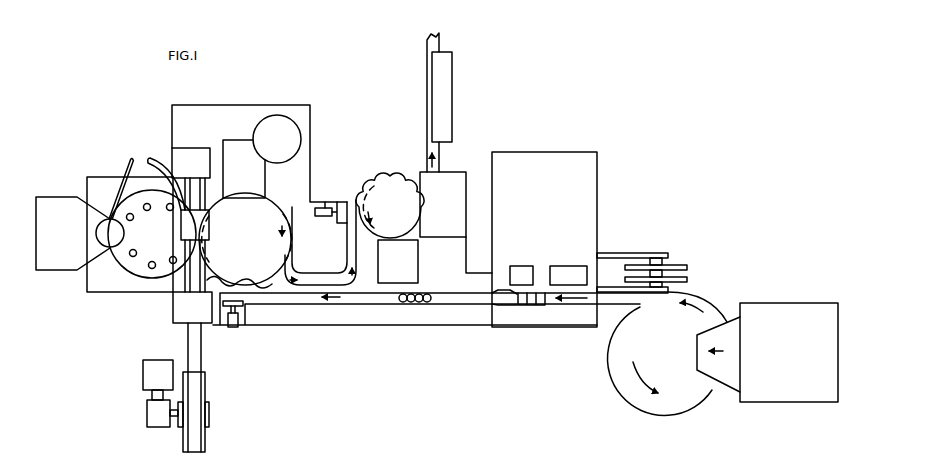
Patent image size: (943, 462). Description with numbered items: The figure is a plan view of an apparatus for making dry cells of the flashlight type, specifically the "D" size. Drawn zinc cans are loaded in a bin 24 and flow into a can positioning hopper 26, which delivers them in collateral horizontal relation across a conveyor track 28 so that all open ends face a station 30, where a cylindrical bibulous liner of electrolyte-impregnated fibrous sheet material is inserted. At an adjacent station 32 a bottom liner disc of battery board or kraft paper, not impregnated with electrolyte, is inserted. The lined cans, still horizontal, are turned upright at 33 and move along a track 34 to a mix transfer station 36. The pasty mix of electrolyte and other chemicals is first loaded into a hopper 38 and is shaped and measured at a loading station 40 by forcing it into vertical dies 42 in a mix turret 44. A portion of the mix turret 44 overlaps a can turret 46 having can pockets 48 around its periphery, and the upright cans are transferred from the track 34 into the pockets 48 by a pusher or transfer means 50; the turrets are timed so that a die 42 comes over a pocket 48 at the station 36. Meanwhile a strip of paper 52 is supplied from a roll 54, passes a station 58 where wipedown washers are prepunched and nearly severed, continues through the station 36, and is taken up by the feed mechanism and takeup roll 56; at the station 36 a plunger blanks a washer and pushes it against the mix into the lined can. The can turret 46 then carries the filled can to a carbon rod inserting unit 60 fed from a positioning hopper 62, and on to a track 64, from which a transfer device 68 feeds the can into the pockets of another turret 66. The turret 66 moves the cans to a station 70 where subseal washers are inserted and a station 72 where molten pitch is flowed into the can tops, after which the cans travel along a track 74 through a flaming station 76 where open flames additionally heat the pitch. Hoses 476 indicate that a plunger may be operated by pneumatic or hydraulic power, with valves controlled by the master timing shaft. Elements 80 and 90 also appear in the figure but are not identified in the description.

The bin 24 is at (796, 358).
The can positioning hopper 26 is at (700, 407).
The conveyor track 28 is at (617, 306).
The liner inserting station 30 is at (577, 265).
The bottom liner disc station 32 is at (532, 248).
The can turning point 33 is at (488, 300).
The track 34 is at (450, 300).
The mix transfer station 36 is at (202, 233).
The mix hopper 38 is at (66, 243).
The loading station 40 is at (152, 234).
The mix dies 42 is at (170, 258).
The mix turret 44 is at (108, 293).
The can turret 46 is at (250, 257).
The can pockets 48 is at (250, 267).
The pusher or transfer means 50 is at (236, 330).
The paper strip 52 is at (205, 356).
The paper roll 54 is at (208, 432).
The feed mechanism and takeup roll 56 is at (198, 171).
The prepunching and precutting station 58 is at (200, 315).
The carbon rod inserting unit 60 is at (250, 180).
The carbon rod positioning hopper 62 is at (283, 146).
The track 64 is at (330, 272).
The turret 66 is at (397, 210).
The transfer device 68 is at (320, 205).
The subseal washer station 70 is at (405, 270).
The pitch station 72 is at (449, 213).
The track 74 is at (425, 116).
The flaming station 76 is at (452, 92).
The separator plates 80 is at (689, 272).
The sensors 90 is at (428, 303).
The hoses 476 is at (147, 178).